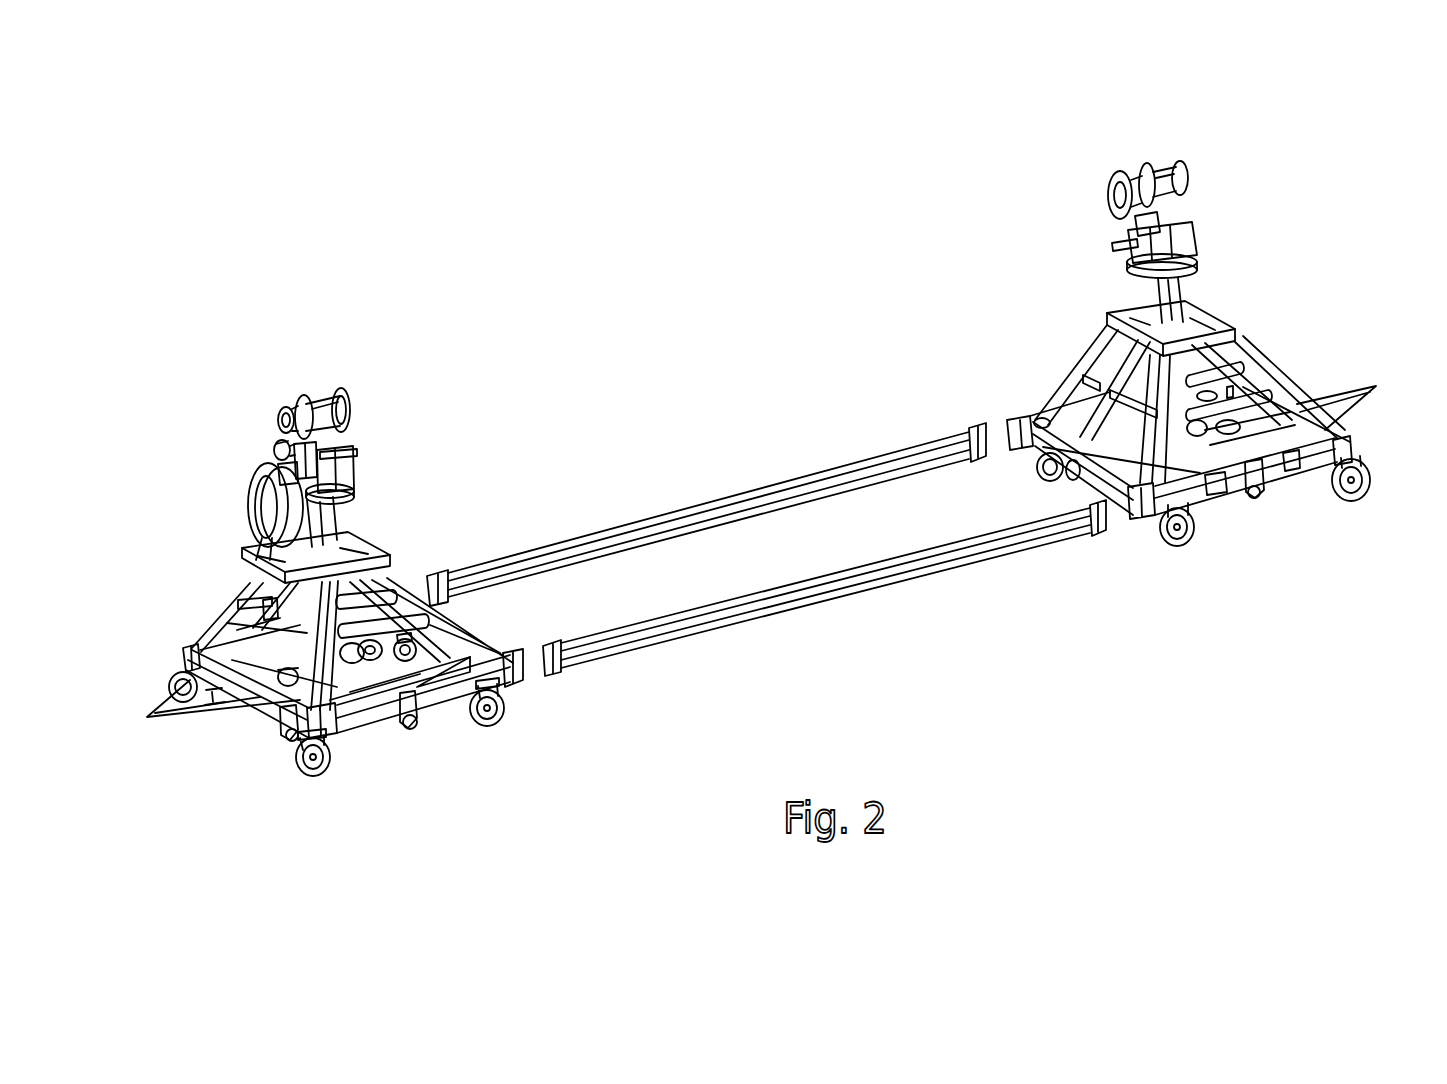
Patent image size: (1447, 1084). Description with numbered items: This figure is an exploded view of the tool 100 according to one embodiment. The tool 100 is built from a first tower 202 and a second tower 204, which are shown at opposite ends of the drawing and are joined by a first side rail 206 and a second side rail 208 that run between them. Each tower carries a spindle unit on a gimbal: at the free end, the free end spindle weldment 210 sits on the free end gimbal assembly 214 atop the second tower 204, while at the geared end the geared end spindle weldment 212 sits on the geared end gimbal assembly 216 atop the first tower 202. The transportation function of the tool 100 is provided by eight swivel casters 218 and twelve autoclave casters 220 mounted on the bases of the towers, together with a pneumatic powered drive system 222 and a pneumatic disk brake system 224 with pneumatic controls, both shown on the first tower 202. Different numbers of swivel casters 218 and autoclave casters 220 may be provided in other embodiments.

The tool 100 is at (763, 423).
The first tower 202 is at (369, 772).
The second tower 204 is at (1225, 512).
The first side rail 206 is at (731, 622).
The second side rail 208 is at (670, 513).
The free end spindle weldment 210 is at (1114, 182).
The geared end spindle weldment 212 is at (328, 388).
The free end gimbal assembly 214 is at (1215, 240).
The geared end gimbal assembly 216 is at (356, 474).
The swivel caster 218 is at (175, 680).
The autoclave caster 220 is at (287, 737).
The pneumatic powered drive system 222 is at (248, 580).
The pneumatic disk brake system 224 is at (337, 545).